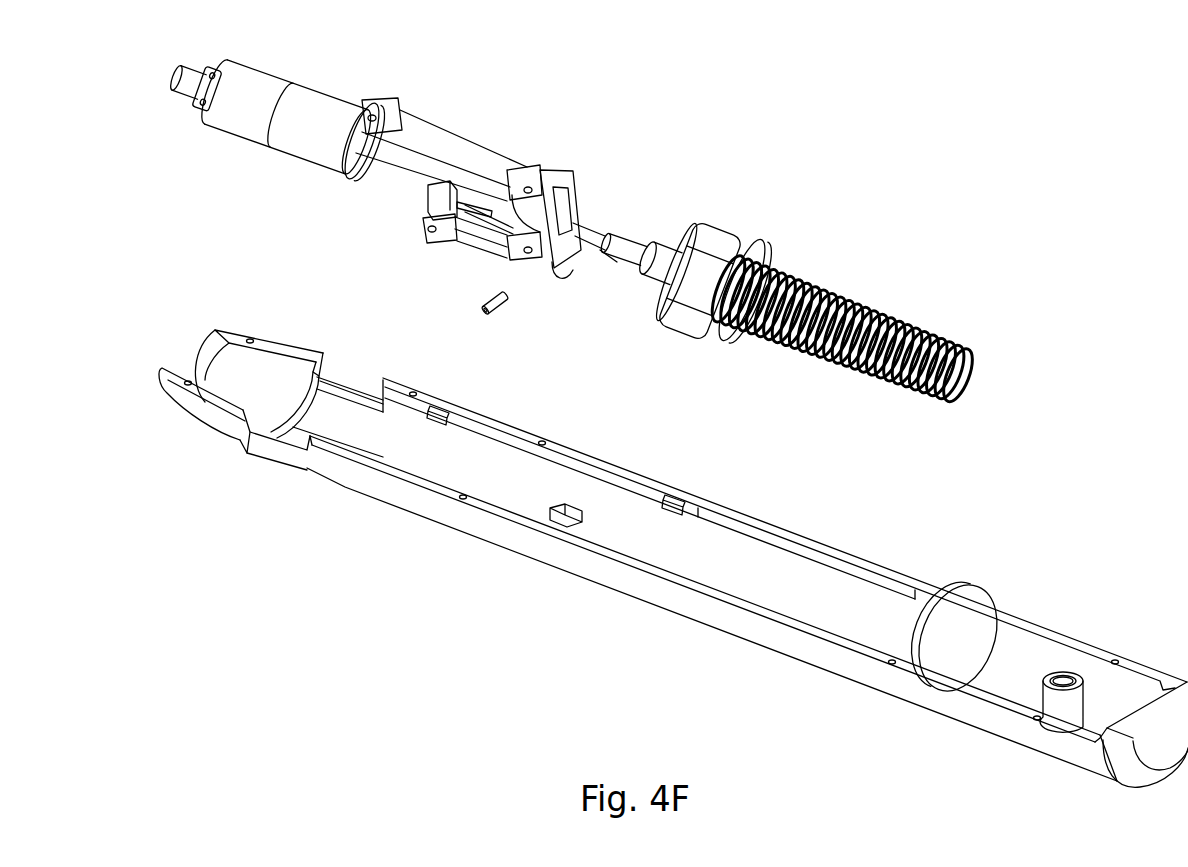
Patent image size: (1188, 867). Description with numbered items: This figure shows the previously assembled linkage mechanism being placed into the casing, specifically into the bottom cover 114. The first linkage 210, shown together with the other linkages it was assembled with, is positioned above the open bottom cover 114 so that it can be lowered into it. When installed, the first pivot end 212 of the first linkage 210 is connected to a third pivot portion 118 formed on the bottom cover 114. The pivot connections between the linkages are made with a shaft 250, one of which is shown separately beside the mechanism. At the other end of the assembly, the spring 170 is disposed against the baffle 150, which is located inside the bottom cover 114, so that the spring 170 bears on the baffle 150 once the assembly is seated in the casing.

The bottom cover 114 is at (665, 603).
The third pivot portion 118 is at (543, 512).
The baffle 150 is at (970, 615).
The spring 170 is at (882, 306).
The first linkage 210 is at (573, 187).
The first pivot end 212 is at (552, 272).
The shaft 250 is at (501, 309).